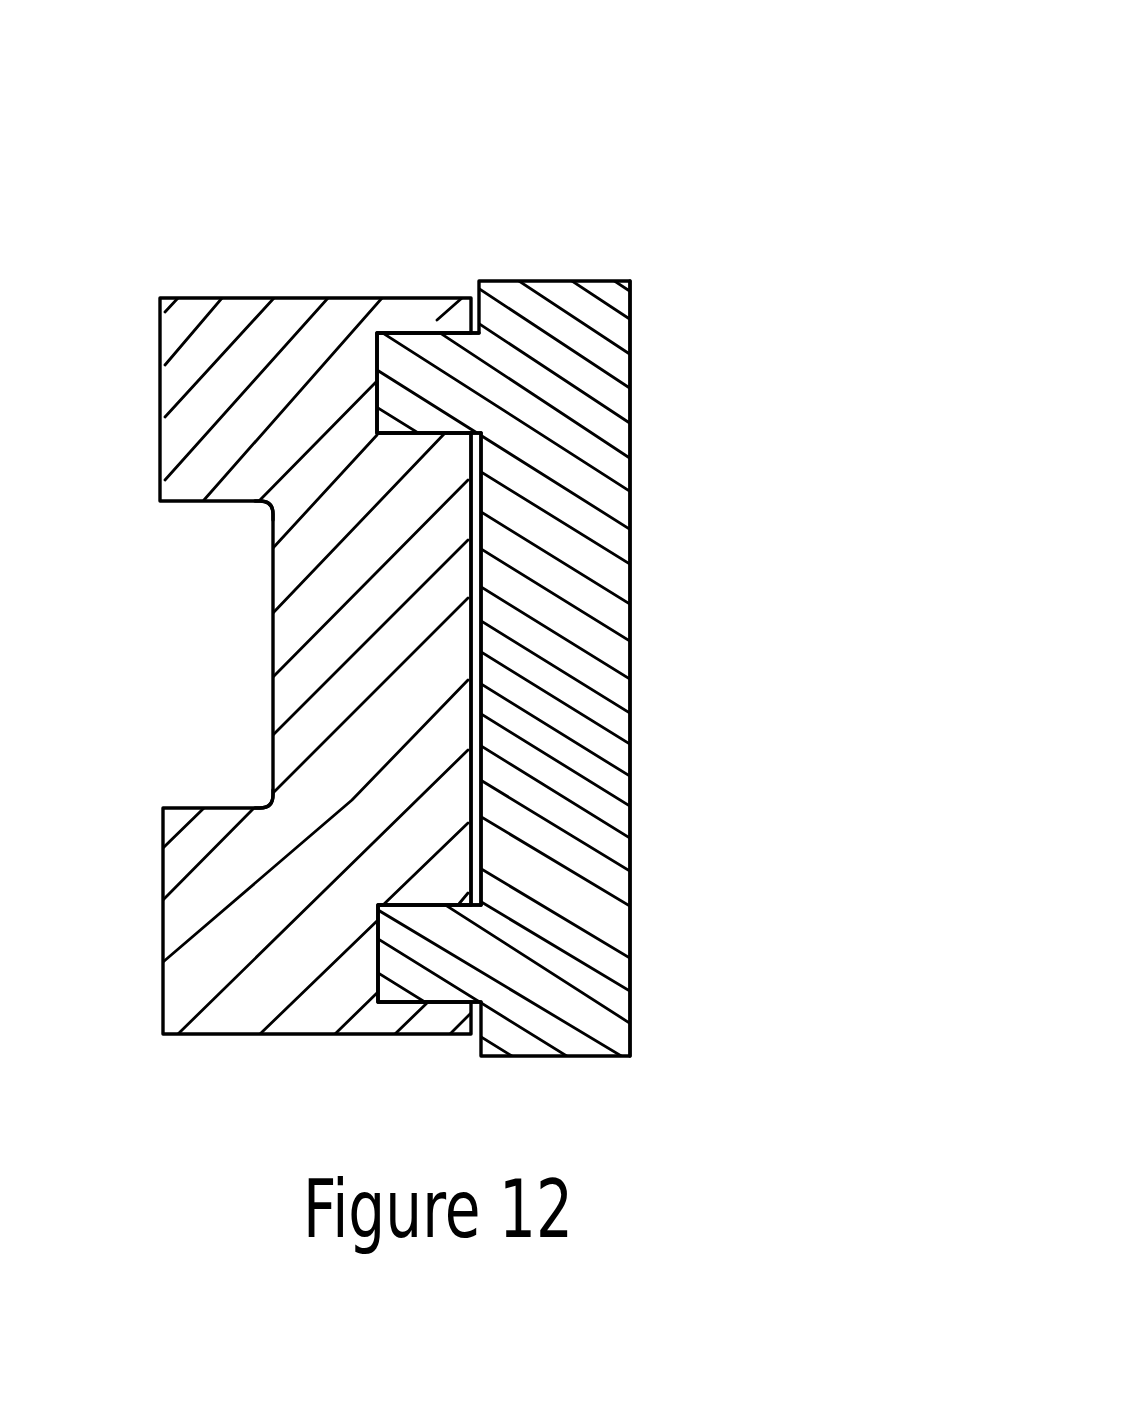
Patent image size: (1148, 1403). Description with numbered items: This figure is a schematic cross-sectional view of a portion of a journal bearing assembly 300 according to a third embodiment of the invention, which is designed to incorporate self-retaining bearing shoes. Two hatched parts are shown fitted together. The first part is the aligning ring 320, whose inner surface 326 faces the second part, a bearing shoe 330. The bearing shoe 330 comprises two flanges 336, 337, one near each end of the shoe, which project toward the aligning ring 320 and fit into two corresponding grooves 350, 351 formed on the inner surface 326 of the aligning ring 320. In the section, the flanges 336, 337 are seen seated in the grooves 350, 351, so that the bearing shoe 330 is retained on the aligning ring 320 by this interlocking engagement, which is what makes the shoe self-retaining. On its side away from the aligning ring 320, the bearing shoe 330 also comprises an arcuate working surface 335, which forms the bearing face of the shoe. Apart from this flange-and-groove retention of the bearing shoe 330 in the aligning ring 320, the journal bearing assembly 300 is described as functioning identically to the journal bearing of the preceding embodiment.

The journal bearing assembly 300 is at (812, 153).
The aligning ring 320 is at (326, 298).
The inner surface 326 is at (473, 623).
The bearing shoe 330 is at (578, 281).
The arcuate working surface 335 is at (633, 798).
The flange 336 is at (405, 365).
The flange 337 is at (422, 975).
The groove 350 is at (400, 437).
The groove 351 is at (402, 905).